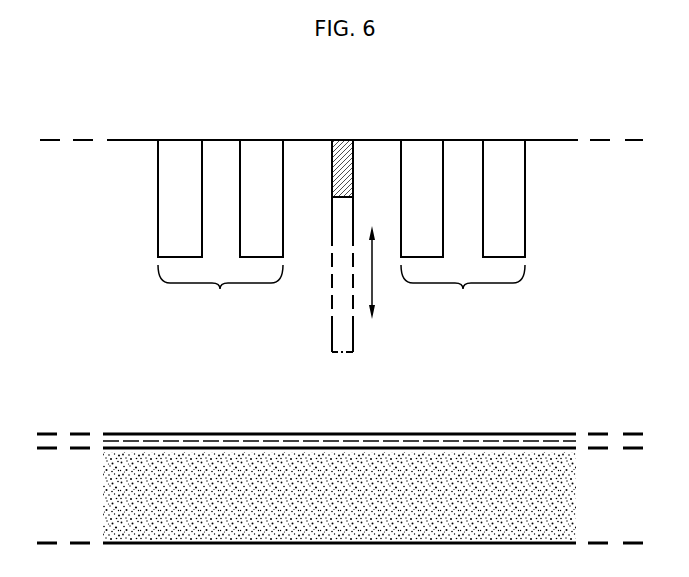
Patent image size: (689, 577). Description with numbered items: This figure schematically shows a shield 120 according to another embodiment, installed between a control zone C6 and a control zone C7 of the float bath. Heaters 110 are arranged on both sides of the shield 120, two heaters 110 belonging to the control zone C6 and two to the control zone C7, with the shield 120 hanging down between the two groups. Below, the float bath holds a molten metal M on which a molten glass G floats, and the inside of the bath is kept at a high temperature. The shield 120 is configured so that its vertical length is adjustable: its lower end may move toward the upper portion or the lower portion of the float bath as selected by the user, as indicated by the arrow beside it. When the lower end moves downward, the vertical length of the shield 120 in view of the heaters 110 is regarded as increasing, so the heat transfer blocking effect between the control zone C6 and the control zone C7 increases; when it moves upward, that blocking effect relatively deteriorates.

The heater 110 is at (263, 157).
The shield 120 is at (343, 153).
The control zone C6 is at (220, 291).
The control zone C7 is at (463, 291).
The molten glass G is at (511, 441).
The molten metal M is at (565, 492).